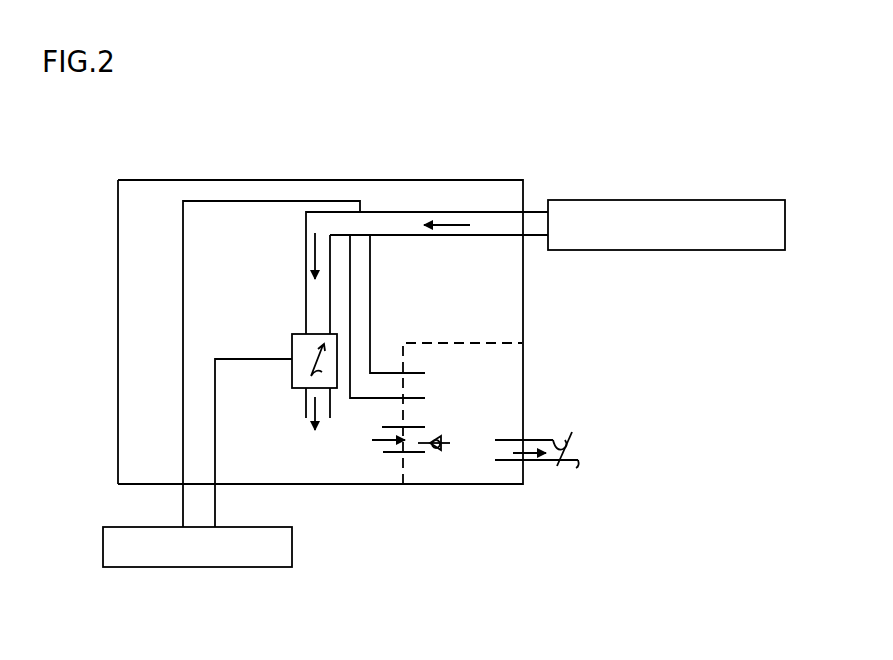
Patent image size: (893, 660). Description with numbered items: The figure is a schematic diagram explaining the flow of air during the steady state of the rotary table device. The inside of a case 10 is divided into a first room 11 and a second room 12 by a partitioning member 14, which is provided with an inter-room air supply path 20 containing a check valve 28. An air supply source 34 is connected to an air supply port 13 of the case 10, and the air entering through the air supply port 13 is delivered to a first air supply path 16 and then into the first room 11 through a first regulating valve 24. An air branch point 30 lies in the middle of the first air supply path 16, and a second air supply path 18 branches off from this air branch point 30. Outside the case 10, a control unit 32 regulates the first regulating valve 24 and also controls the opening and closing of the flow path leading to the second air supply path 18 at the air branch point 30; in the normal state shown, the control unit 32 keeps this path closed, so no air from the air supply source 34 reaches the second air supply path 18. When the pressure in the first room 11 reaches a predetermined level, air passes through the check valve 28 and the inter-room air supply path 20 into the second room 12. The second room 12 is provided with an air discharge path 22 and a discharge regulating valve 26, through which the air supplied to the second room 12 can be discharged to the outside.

The case 10 is at (482, 149).
The first room 11 is at (118, 467).
The second room 12 is at (448, 485).
The air supply port 13 is at (527, 213).
The partitioning member 14 is at (403, 480).
The first air supply path 16 is at (306, 318).
The second air supply path 18 is at (370, 273).
The inter-room air supply path 20 is at (388, 452).
The air discharge path 22 is at (527, 460).
The first regulating valve 24 is at (292, 368).
The discharge regulating valve 26 is at (577, 440).
The check valve 28 is at (448, 442).
The air branch point 30 is at (368, 235).
The control unit 32 is at (228, 567).
The air supply source 34 is at (610, 197).